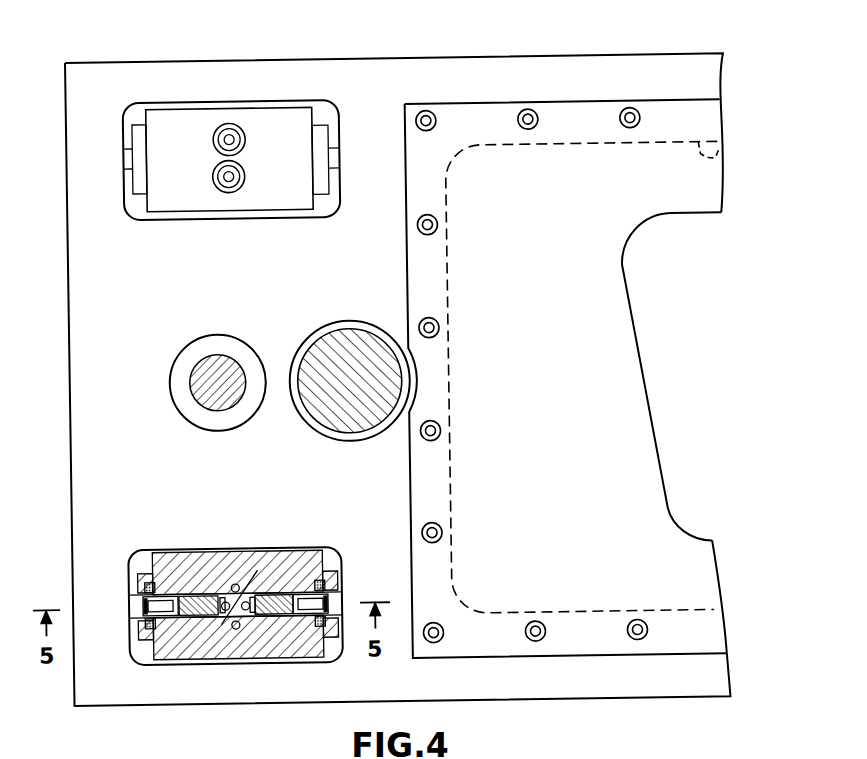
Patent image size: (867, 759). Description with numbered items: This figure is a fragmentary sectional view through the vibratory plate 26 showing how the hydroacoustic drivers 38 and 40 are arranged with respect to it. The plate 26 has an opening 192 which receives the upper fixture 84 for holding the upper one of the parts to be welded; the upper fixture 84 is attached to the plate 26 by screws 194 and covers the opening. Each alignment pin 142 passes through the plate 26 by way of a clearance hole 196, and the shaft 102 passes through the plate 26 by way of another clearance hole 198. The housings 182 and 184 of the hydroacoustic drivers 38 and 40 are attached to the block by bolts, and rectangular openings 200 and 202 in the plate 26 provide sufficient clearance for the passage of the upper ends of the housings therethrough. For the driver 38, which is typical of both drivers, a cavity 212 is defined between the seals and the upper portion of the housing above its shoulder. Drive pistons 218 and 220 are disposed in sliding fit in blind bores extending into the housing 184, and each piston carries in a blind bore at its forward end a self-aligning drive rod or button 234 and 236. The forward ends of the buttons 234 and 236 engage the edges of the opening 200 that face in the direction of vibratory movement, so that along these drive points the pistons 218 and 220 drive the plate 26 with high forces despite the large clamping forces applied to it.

The vibratory plate 26 is at (516, 67).
The upper fixture 84 is at (695, 205).
The opening 192 is at (717, 168).
The screws 194 is at (630, 123).
The hydroacoustic driver 40 is at (244, 167).
The rectangular opening 202 is at (340, 104).
The housing member 182 is at (279, 111).
The clearance hole 198 is at (213, 383).
The shaft 102 is at (200, 405).
The clearance hole 196 is at (347, 383).
The alignment pin 142 is at (328, 417).
The hydroacoustic driver 38 is at (244, 604).
The rectangular opening 200 is at (336, 574).
The housing member 184 is at (308, 566).
The cavity 212 is at (135, 573).
The self-aligning drive rod or button 234 is at (159, 604).
The drive piston 218 is at (189, 602).
The drive piston 220 is at (265, 593).
The self-aligning drive rod or button 236 is at (289, 603).